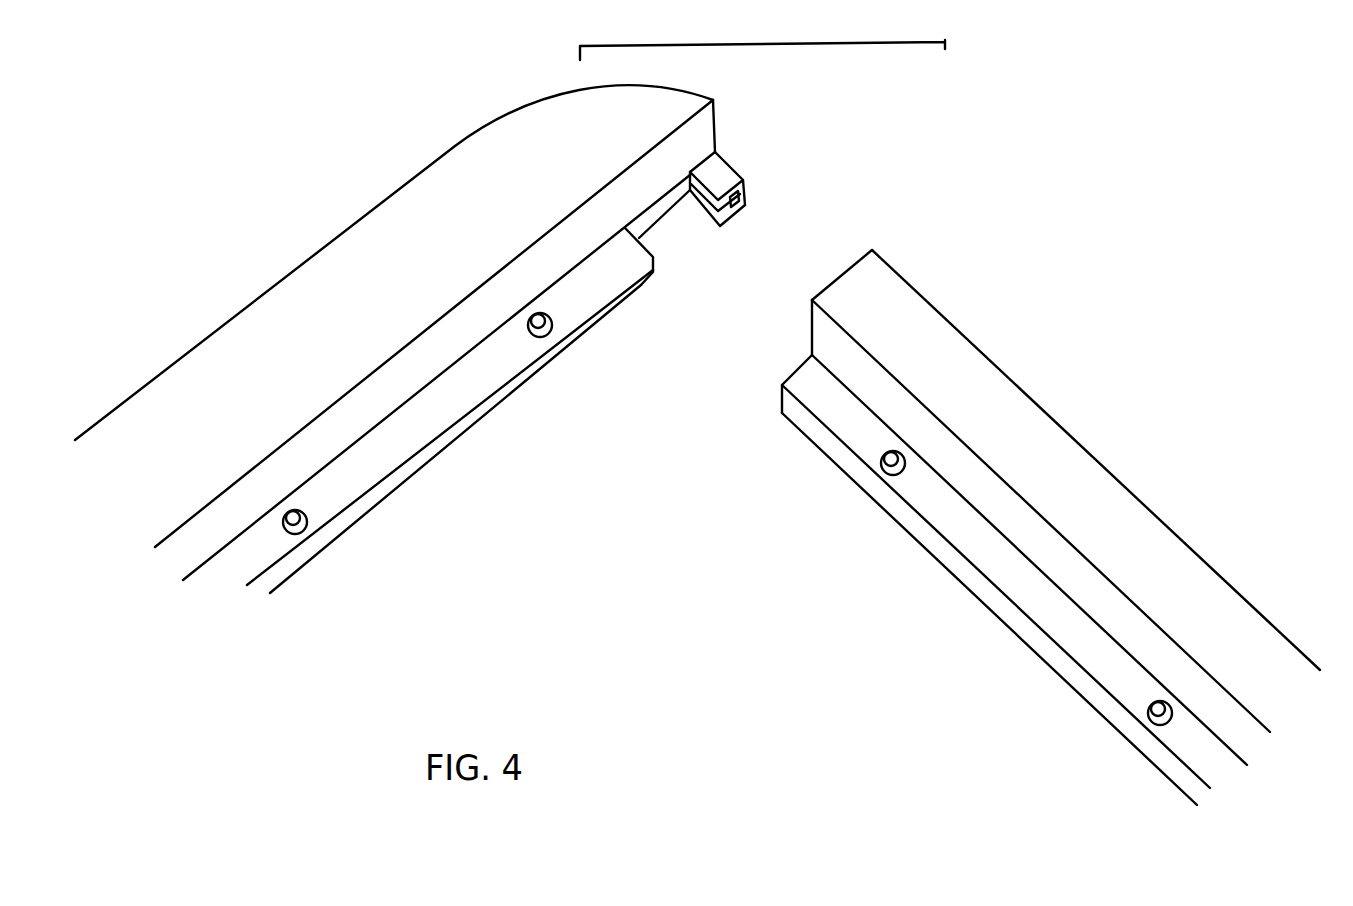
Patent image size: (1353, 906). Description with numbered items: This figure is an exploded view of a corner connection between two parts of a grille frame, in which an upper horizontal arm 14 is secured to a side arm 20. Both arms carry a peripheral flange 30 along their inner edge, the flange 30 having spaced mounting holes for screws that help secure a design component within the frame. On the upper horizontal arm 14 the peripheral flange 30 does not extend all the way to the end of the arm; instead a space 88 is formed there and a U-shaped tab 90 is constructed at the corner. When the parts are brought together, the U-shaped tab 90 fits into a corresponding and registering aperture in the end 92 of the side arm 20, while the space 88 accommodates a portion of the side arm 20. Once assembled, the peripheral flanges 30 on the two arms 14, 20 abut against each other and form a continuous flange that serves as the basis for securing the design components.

The upper horizontal arm 14 is at (408, 190).
The side arm 20 is at (1063, 465).
The peripheral flange 30 is at (458, 400).
The space 88 is at (683, 250).
The U-shaped tab 90 is at (720, 177).
The end of the arm 92 is at (857, 262).